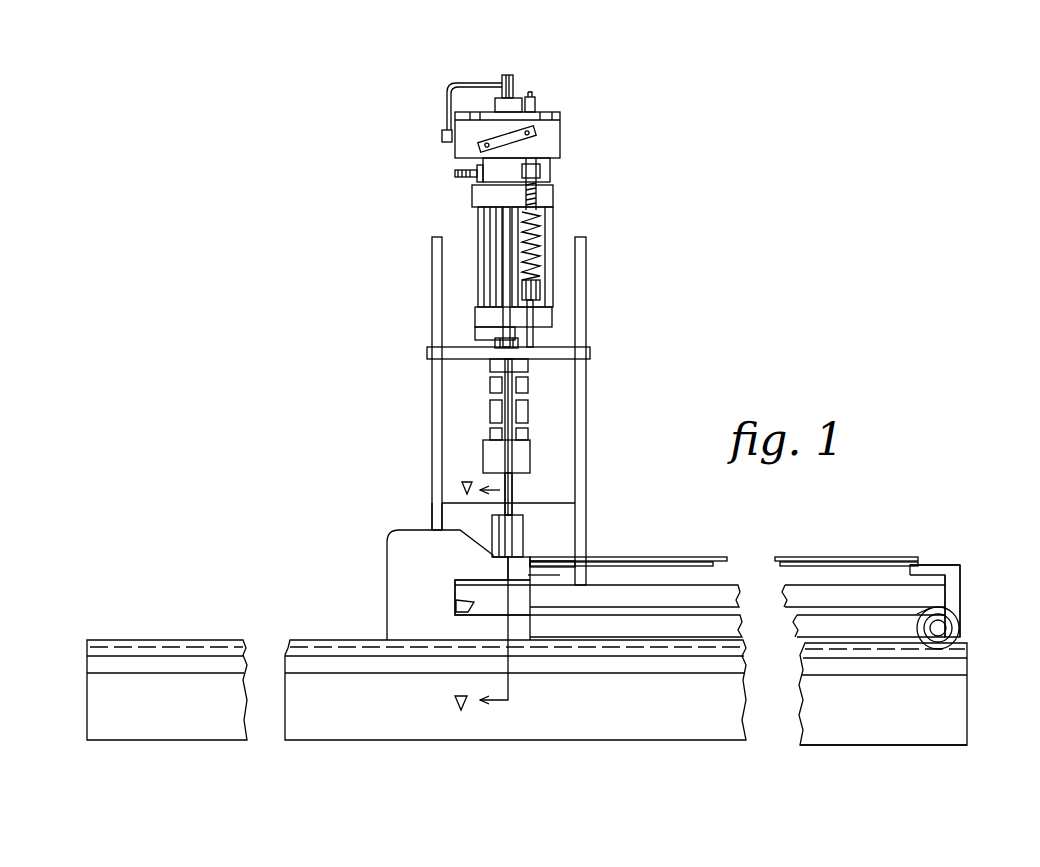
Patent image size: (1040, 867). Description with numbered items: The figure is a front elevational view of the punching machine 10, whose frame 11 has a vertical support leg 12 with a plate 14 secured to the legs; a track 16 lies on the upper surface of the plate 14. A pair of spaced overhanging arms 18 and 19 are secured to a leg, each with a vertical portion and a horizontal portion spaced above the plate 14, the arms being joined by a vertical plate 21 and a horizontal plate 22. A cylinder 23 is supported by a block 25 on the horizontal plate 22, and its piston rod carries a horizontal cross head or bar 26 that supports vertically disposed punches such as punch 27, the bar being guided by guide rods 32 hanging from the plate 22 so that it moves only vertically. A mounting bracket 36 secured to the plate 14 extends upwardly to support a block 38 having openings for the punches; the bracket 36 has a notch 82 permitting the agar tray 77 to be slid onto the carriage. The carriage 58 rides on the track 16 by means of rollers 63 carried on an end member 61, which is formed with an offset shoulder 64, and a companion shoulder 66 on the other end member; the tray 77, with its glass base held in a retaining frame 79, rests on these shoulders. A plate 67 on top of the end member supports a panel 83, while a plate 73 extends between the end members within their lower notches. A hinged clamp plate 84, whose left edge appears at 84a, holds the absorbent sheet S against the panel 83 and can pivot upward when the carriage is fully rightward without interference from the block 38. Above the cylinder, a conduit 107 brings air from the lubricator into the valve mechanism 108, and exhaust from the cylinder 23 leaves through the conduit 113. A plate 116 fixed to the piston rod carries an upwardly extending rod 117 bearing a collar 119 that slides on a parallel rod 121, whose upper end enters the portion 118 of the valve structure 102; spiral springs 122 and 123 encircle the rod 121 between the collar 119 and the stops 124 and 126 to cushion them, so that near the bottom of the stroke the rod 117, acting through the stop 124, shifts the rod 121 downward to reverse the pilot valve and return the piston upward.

The machine 10 is at (348, 392).
The frame 11 is at (919, 748).
The vertical support leg 12 is at (832, 728).
The plate 14 is at (953, 671).
The track 16 is at (958, 658).
The overhanging arm 18 is at (585, 410).
The overhanging arm 19 is at (437, 400).
The vertical plate 21 is at (528, 424).
The horizontal plate 22 is at (586, 352).
The cylinder 23 is at (493, 250).
The block 25 is at (495, 344).
The horizontal cross head or bar 26 is at (525, 450).
The punch 27 is at (518, 502).
The guide rod 32 is at (502, 413).
The mounting bracket 36 is at (462, 552).
The block 38 is at (524, 536).
The carriage 58 is at (740, 584).
The end member 61 is at (960, 585).
The roller 63 is at (950, 620).
The offset shoulder 64 is at (925, 612).
The offset shoulder 66 is at (458, 608).
The plate 67 is at (935, 574).
The plate 73 is at (745, 628).
The tray 77 is at (827, 584).
The retaining frame 79 is at (686, 594).
The notch 82 is at (462, 614).
The panel 83 is at (925, 560).
The clamp plate 84 is at (645, 548).
The left edge of clamp plate 84a is at (535, 559).
The absorbent sheet S is at (678, 560).
The valve structure 102 is at (436, 126).
The conduit 107 is at (515, 90).
The valve mechanism 108 is at (531, 100).
The conduit 113 is at (462, 178).
The plate 116 is at (528, 400).
The rod 117 is at (503, 277).
The portion of the valve structure 118 is at (553, 129).
The collar 119 is at (552, 211).
The rod 121 is at (535, 320).
The spiral spring 122 is at (538, 242).
The spiral spring 123 is at (545, 187).
The stop 124 is at (540, 292).
The stop 126 is at (541, 170).